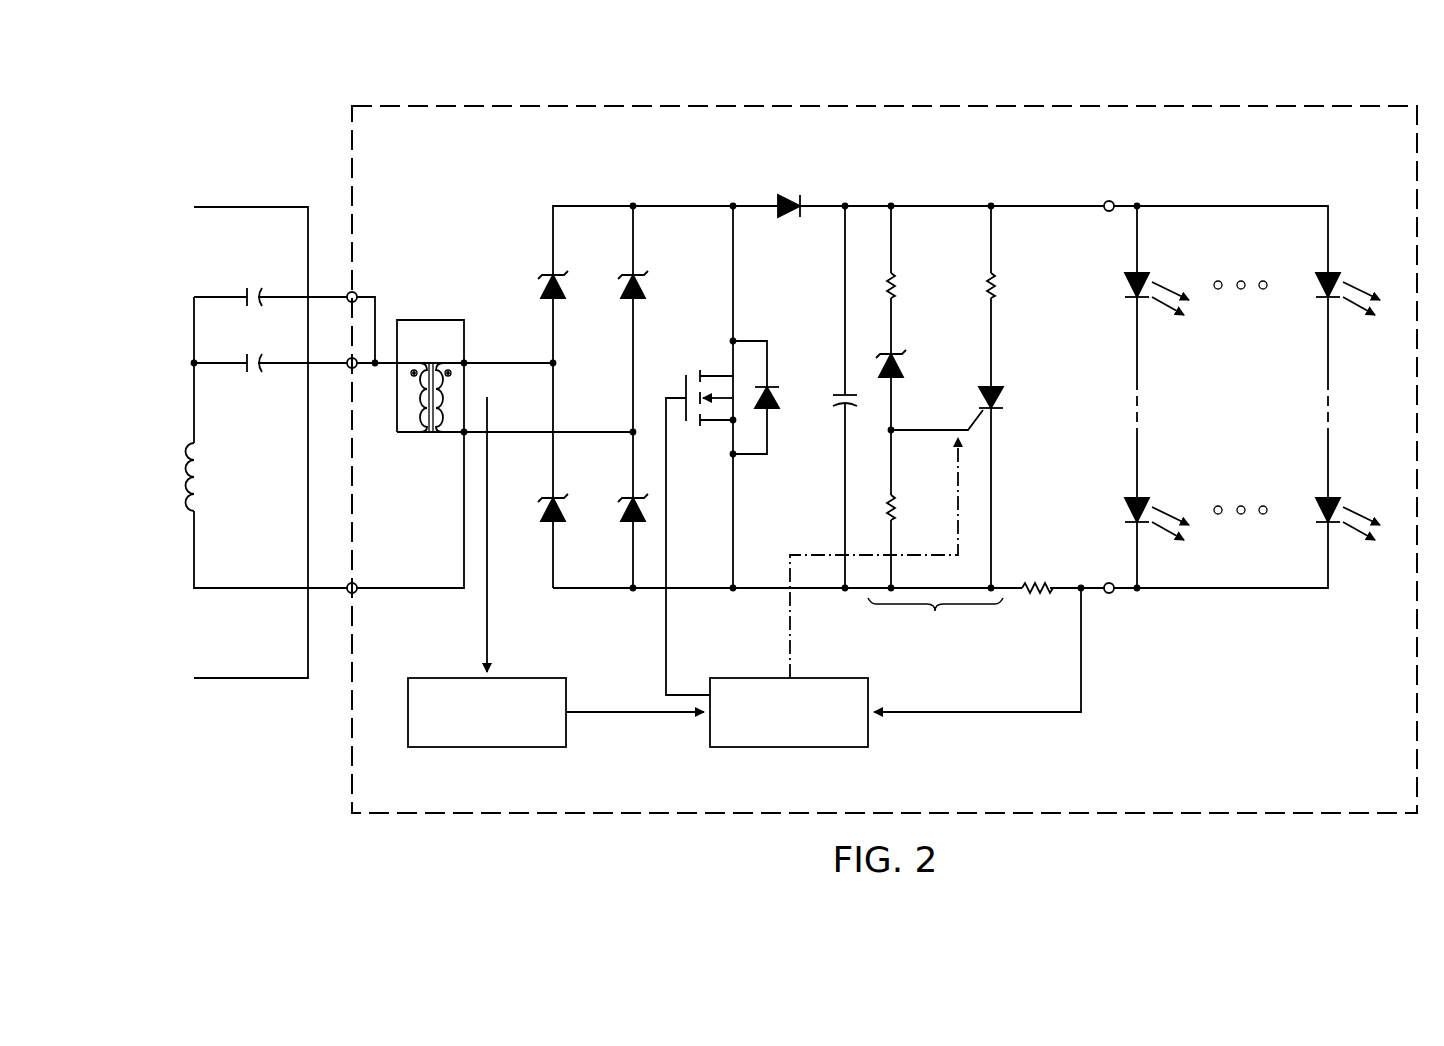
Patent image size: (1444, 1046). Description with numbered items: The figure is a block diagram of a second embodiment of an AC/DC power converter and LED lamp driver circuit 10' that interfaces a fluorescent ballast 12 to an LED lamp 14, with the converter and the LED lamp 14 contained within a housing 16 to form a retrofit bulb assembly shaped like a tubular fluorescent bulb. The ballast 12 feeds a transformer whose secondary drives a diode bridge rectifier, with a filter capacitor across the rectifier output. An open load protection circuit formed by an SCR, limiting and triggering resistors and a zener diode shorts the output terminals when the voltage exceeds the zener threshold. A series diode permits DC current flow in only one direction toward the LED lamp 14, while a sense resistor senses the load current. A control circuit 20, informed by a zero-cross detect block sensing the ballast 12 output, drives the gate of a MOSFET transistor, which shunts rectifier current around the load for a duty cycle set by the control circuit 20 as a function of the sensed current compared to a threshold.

The AC/DC power converter and LED lamp driver circuit 10' is at (735, 433).
The fluorescent ballast circuit 12 is at (238, 507).
The LED lamp 14 is at (1122, 195).
The housing 16 is at (902, 103).
The control circuit 20 is at (778, 748).